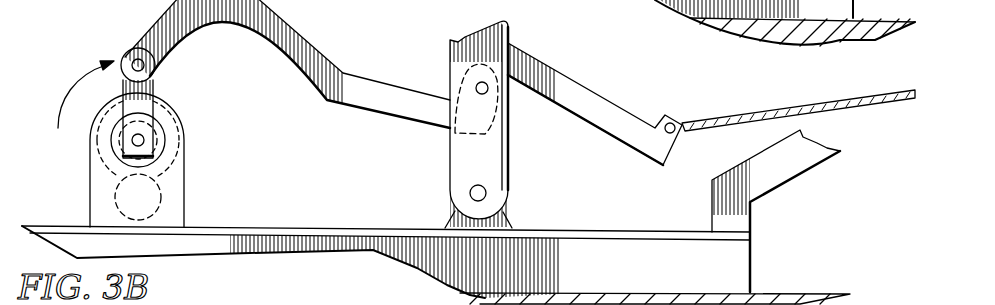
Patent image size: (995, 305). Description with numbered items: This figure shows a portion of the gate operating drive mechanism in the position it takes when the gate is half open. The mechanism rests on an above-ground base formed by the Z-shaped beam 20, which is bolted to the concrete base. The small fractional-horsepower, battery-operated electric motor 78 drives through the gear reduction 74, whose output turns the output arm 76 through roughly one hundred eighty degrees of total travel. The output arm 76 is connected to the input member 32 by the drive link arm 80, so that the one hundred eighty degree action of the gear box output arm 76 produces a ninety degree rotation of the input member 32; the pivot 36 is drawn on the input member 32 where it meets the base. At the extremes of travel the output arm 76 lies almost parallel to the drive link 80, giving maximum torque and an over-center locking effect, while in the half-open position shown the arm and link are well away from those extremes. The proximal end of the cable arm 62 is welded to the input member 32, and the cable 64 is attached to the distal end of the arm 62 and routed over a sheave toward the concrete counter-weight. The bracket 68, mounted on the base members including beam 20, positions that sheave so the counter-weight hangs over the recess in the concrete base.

The Z shaped beam 20 is at (362, 203).
The input member 32 is at (498, 143).
The pivot pin 36 is at (480, 193).
The cable arm 62 is at (620, 117).
The cable 64 is at (789, 80).
The bracket 68 is at (803, 160).
The gear reduction 74 is at (184, 204).
The output arm 76 is at (123, 92).
The electric motor 78 is at (116, 195).
The drive link arm 80 is at (393, 103).